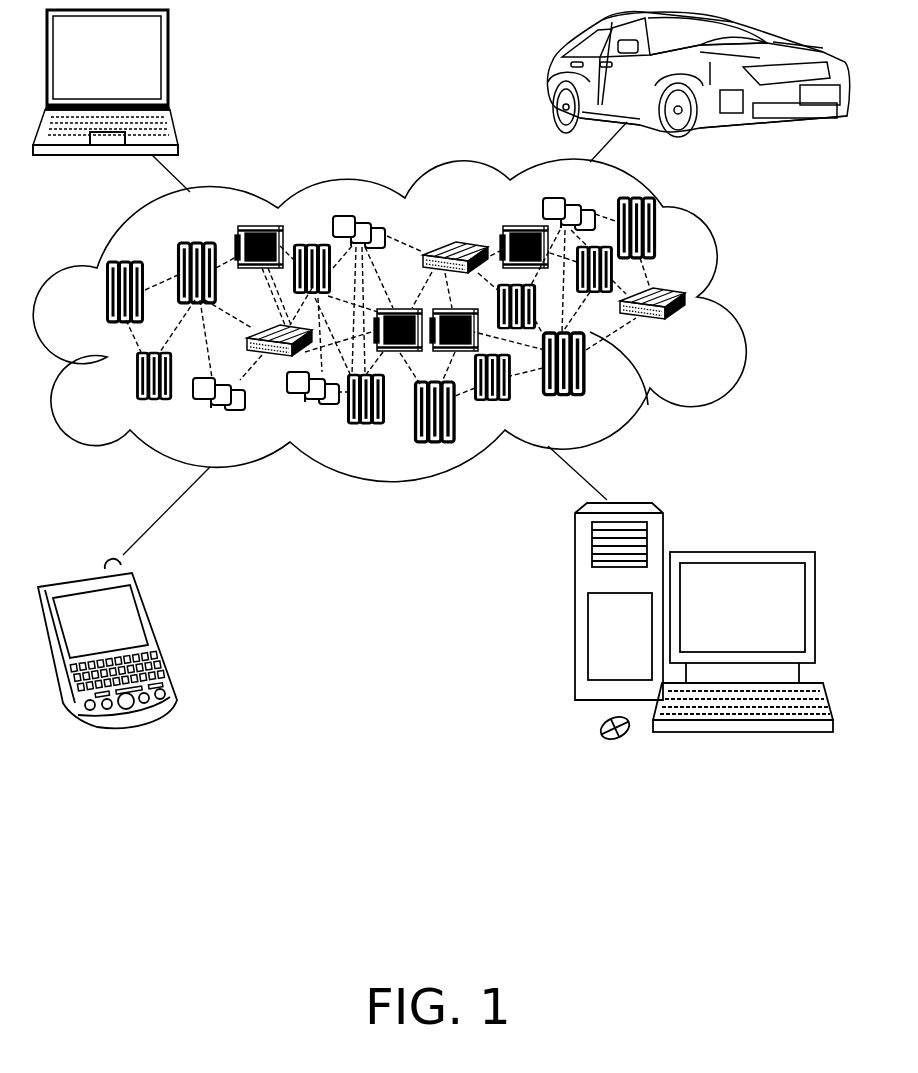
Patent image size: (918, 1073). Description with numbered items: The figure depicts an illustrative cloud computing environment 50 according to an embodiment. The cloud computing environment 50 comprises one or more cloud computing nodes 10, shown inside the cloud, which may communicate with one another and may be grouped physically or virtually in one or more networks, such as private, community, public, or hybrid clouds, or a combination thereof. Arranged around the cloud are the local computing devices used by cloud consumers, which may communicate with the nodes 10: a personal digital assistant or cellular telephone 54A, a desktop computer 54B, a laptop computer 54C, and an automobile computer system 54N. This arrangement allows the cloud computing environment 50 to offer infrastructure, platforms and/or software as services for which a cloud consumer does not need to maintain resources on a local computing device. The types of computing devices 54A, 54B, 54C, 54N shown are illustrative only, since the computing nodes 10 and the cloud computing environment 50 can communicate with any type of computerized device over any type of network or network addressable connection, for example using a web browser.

The cloud computing node 10 is at (693, 328).
The cloud computing environment 50 is at (740, 299).
The personal digital assistant or cellular telephone 54A is at (158, 636).
The desktop computer 54B is at (738, 552).
The laptop computer 54C is at (166, 63).
The automobile computer system 54N is at (548, 78).